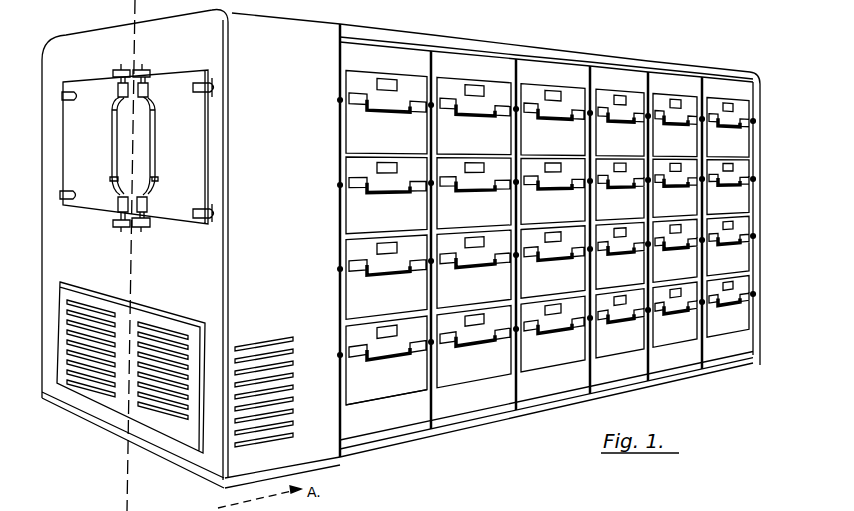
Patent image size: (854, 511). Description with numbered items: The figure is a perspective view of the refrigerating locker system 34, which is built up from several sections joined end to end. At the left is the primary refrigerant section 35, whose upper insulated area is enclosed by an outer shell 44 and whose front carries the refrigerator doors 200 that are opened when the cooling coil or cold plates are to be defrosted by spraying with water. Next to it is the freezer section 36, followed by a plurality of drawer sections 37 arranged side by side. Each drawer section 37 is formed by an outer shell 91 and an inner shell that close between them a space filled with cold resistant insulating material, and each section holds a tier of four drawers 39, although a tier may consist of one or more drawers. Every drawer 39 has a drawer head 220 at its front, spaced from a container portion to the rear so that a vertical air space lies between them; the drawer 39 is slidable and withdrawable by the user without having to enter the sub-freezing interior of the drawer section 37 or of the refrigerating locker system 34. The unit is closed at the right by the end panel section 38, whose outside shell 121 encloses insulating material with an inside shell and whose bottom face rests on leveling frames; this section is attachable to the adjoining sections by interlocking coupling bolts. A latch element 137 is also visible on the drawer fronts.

The refrigerating locker system 34 is at (486, 428).
The primary refrigerant section 35 is at (263, 20).
The freezer section 36 is at (367, 33).
The drawer section 37 is at (456, 43).
The end panel section 38 is at (757, 76).
The drawer 39 is at (608, 203).
The outer shell 44 is at (232, 298).
The outer shell 91 is at (534, 77).
The outside shell 121 is at (758, 258).
The latch 137 is at (538, 188).
The refrigerator doors 200 is at (74, 137).
The drawer head 220 is at (391, 131).